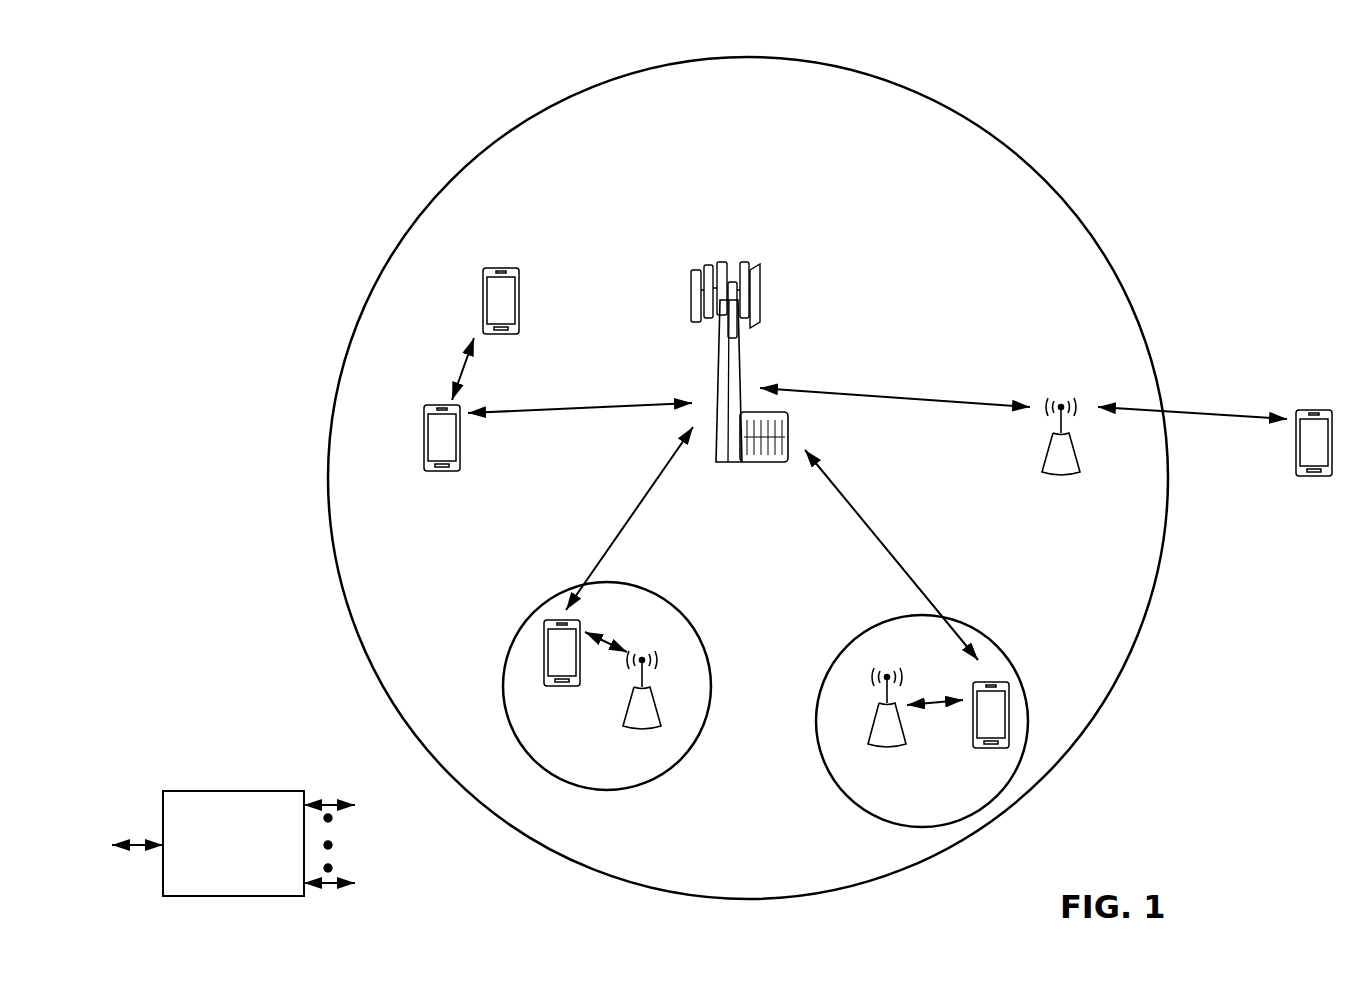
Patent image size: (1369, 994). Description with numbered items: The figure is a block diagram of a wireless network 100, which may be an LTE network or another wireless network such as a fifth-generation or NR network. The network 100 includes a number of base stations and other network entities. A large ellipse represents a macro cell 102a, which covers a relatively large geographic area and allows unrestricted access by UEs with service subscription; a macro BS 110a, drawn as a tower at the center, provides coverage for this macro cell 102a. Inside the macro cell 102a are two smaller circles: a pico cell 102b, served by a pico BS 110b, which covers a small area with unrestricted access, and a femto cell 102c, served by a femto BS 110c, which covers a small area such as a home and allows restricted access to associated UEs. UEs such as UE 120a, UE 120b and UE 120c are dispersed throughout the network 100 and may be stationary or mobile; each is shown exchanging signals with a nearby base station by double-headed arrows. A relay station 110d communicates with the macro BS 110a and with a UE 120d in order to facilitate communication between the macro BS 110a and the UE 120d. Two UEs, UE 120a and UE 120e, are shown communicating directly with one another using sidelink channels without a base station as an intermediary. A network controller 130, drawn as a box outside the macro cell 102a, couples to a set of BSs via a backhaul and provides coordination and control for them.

The wireless network 100 is at (222, 55).
The macro cell 102a is at (1022, 160).
The pico cell 102b is at (693, 627).
The femto cell 102c is at (860, 633).
The macro BS 110a is at (734, 255).
The pico BS 110b is at (660, 718).
The femto BS 110c is at (867, 728).
The relay station 110d is at (1063, 398).
The UE 120a is at (424, 437).
The UE 120b is at (548, 688).
The UE 120c is at (975, 750).
The UE 120d is at (1322, 408).
The UE 120e is at (483, 290).
The network controller 130 is at (232, 790).